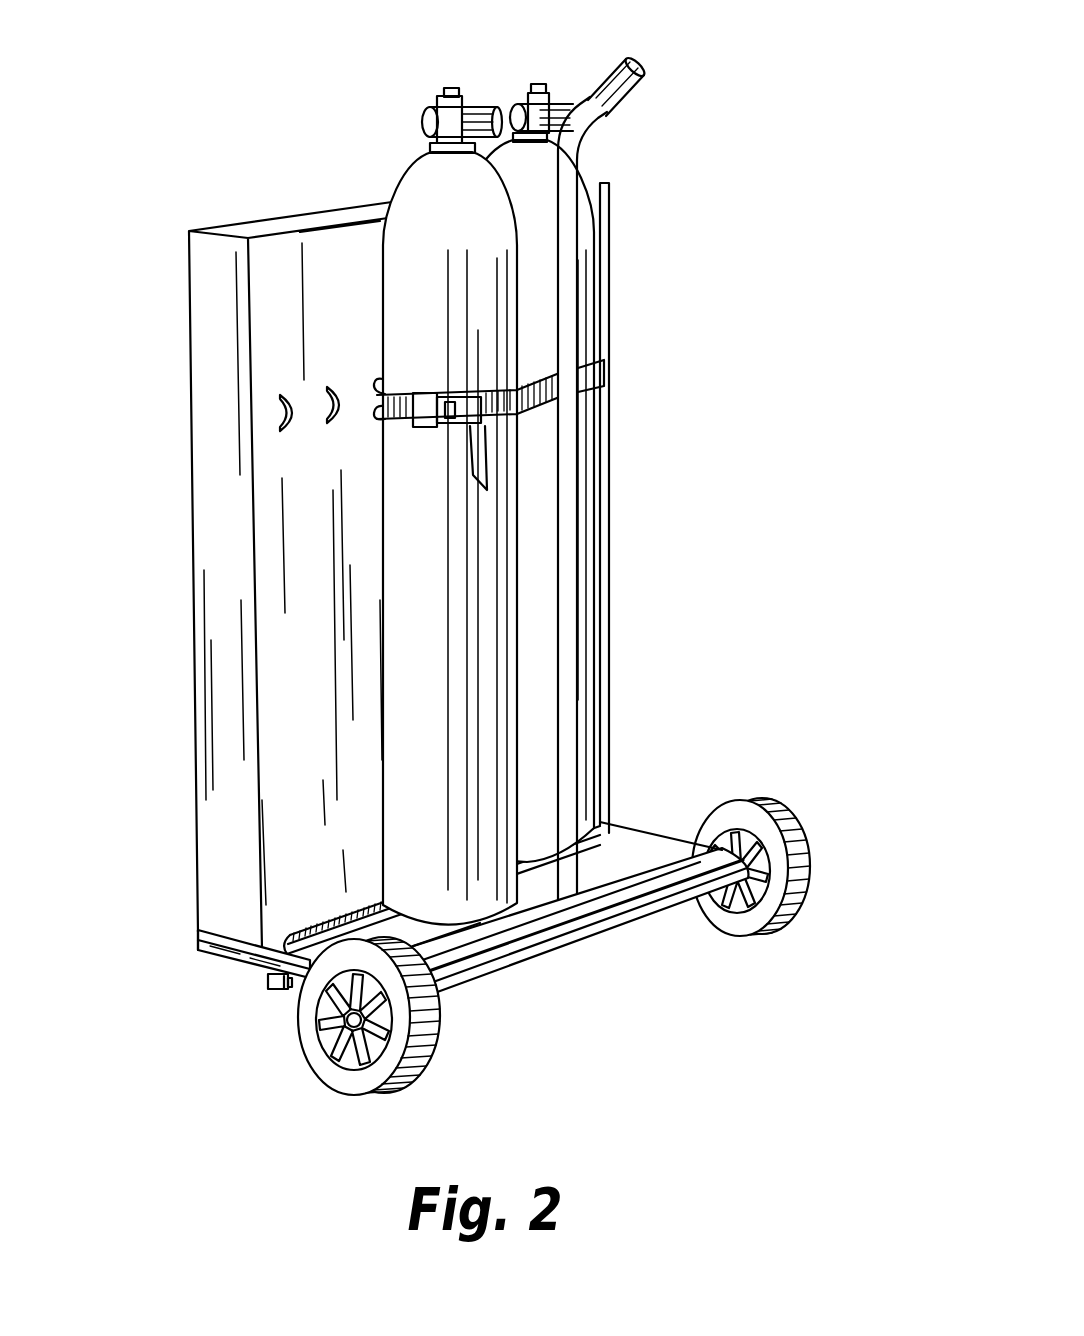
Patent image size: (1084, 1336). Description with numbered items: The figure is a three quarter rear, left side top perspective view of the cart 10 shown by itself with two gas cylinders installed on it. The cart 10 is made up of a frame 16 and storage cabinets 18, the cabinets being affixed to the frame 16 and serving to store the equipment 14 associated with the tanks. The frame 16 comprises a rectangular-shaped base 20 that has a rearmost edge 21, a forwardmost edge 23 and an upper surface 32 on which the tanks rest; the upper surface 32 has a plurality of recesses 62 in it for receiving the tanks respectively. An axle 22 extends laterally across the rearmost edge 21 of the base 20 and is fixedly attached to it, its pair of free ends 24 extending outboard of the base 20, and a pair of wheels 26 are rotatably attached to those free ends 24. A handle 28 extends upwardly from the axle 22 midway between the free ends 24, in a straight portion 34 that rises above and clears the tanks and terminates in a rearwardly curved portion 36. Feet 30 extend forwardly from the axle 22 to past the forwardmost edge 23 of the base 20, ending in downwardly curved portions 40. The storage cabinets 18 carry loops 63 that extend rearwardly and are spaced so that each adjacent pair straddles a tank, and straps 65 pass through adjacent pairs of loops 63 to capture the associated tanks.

The cart 10 is at (246, 150).
The equipment 14 is at (222, 282).
The frame 16 is at (554, 946).
The storage cabinets 18 is at (351, 565).
The base 20 is at (217, 967).
The rearmost edge 21 is at (670, 880).
The axle 22 is at (359, 1024).
The forwardmost edge 23 is at (197, 939).
The free ends 24 is at (748, 862).
The wheels 26 is at (815, 860).
The handle 28 is at (571, 304).
The feet 30 is at (232, 1037).
The upper surface 32 is at (292, 930).
The straight portion 34 is at (571, 506).
The rearwardly curved portion 36 is at (586, 133).
The downwardly curved portions 40 is at (281, 1000).
The recesses 62 is at (425, 946).
The loops 63 is at (286, 442).
The straps 65 is at (403, 428).